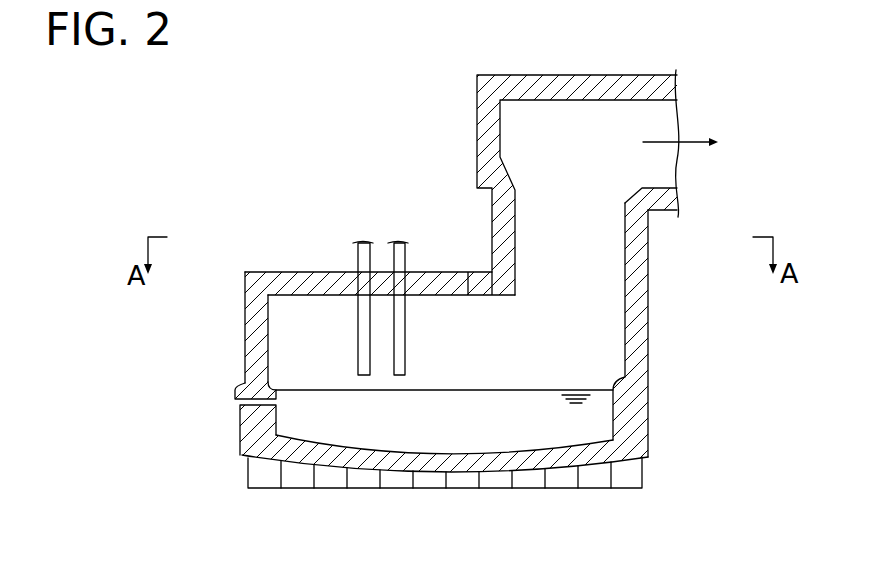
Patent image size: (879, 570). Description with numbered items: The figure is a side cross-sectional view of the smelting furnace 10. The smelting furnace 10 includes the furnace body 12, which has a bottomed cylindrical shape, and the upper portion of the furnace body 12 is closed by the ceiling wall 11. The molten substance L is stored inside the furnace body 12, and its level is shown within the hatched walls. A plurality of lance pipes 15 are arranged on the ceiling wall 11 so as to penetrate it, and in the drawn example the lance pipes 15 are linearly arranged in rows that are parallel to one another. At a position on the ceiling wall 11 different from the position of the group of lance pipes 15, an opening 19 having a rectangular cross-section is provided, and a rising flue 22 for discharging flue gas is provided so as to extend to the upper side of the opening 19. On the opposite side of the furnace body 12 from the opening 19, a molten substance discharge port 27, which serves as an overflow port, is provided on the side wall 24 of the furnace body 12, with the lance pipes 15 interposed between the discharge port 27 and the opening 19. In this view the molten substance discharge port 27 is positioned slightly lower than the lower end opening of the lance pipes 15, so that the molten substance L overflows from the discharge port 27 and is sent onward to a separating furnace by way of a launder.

The smelting furnace 10 is at (245, 168).
The ceiling wall 11 is at (291, 271).
The furnace body 12 is at (236, 345).
The lance pipes 15 is at (394, 252).
The opening 19 is at (580, 284).
The rising flue 22 is at (570, 203).
The side wall 24 is at (245, 312).
The molten substance discharge port 27 is at (250, 394).
The molten substance L is at (582, 417).